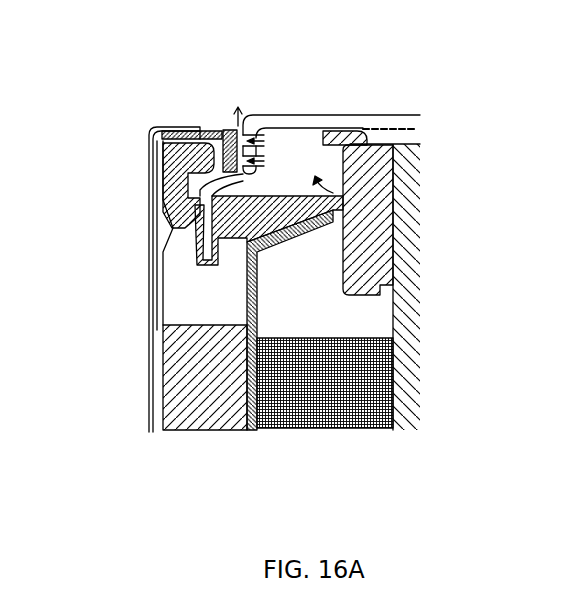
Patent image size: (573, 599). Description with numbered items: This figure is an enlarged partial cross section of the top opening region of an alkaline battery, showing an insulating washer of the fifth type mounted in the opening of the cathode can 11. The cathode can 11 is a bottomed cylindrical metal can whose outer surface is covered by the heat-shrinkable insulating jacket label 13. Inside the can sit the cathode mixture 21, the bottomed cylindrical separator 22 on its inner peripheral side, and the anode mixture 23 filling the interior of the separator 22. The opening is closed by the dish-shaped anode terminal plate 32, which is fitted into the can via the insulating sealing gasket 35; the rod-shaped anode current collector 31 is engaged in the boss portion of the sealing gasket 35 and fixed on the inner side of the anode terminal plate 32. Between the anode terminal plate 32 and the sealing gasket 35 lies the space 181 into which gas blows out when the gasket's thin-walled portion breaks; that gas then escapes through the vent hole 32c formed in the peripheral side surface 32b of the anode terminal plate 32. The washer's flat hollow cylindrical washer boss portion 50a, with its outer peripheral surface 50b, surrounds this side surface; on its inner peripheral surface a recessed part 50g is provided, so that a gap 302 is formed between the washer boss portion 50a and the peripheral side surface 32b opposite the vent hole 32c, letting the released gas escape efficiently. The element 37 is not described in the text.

The cathode can 11 is at (158, 302).
The jacket label 13 is at (150, 230).
The cathode mixture 21 is at (190, 432).
The separator 22 is at (250, 432).
The anode mixture 23 is at (362, 428).
The anode current collector 31 is at (407, 397).
The anode terminal plate 32 is at (393, 117).
The peripheral side surface 32b is at (248, 137).
The vent hole 32c is at (262, 158).
The sealing gasket 35 is at (388, 235).
The washer 37 is at (353, 129).
The space 181 is at (300, 150).
The gap 302 is at (207, 158).
The washer boss portion 50a is at (231, 127).
The outer peripheral surface 50b is at (207, 125).
The recessed part 50g is at (235, 168).